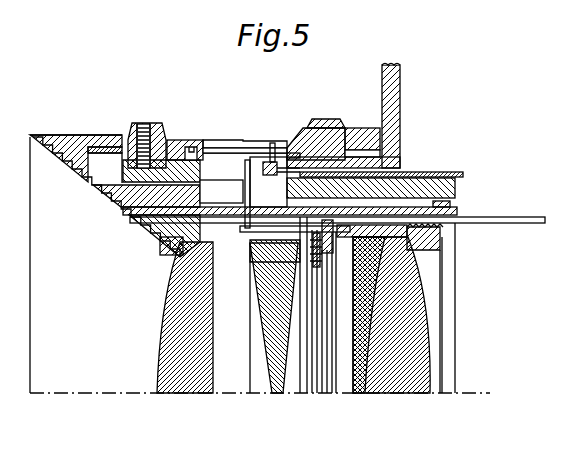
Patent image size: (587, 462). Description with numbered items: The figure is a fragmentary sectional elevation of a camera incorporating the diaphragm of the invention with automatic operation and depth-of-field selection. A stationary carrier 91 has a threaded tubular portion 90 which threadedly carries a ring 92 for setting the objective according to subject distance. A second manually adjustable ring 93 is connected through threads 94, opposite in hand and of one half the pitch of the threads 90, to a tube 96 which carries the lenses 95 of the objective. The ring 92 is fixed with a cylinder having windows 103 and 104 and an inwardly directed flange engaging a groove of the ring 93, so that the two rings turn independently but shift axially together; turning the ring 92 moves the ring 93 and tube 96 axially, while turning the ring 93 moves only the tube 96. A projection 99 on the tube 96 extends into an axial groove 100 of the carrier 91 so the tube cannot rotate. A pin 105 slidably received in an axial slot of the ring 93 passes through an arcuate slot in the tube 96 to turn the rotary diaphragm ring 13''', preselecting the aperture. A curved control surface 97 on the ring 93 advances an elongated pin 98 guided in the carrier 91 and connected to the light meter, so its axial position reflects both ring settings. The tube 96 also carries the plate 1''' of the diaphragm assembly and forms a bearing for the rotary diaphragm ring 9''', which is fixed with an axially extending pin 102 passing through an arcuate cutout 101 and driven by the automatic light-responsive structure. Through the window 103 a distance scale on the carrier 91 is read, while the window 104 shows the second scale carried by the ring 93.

The manually adjustable ring 93 is at (130, 133).
The window 104 is at (210, 143).
The window 103 is at (260, 147).
The control surface 97 is at (275, 167).
The threaded tubular portion 90 is at (310, 150).
The ring 92 is at (335, 118).
The stationary carrier 91 is at (393, 127).
The axial groove 100 is at (397, 203).
The elongated pin 98 is at (450, 172).
The projection 99 is at (450, 207).
The axially extending pin 102 is at (513, 220).
The elongated arcuate cutout 101 is at (430, 243).
The threads 94 is at (110, 202).
The tube 96 is at (147, 223).
The pin 105 is at (250, 192).
The rotary diaphragm ring 13''' is at (257, 316).
The plate 1''' is at (397, 305).
The rotary diaphragm ring 9''' is at (419, 315).
The lenses 95 is at (352, 395).